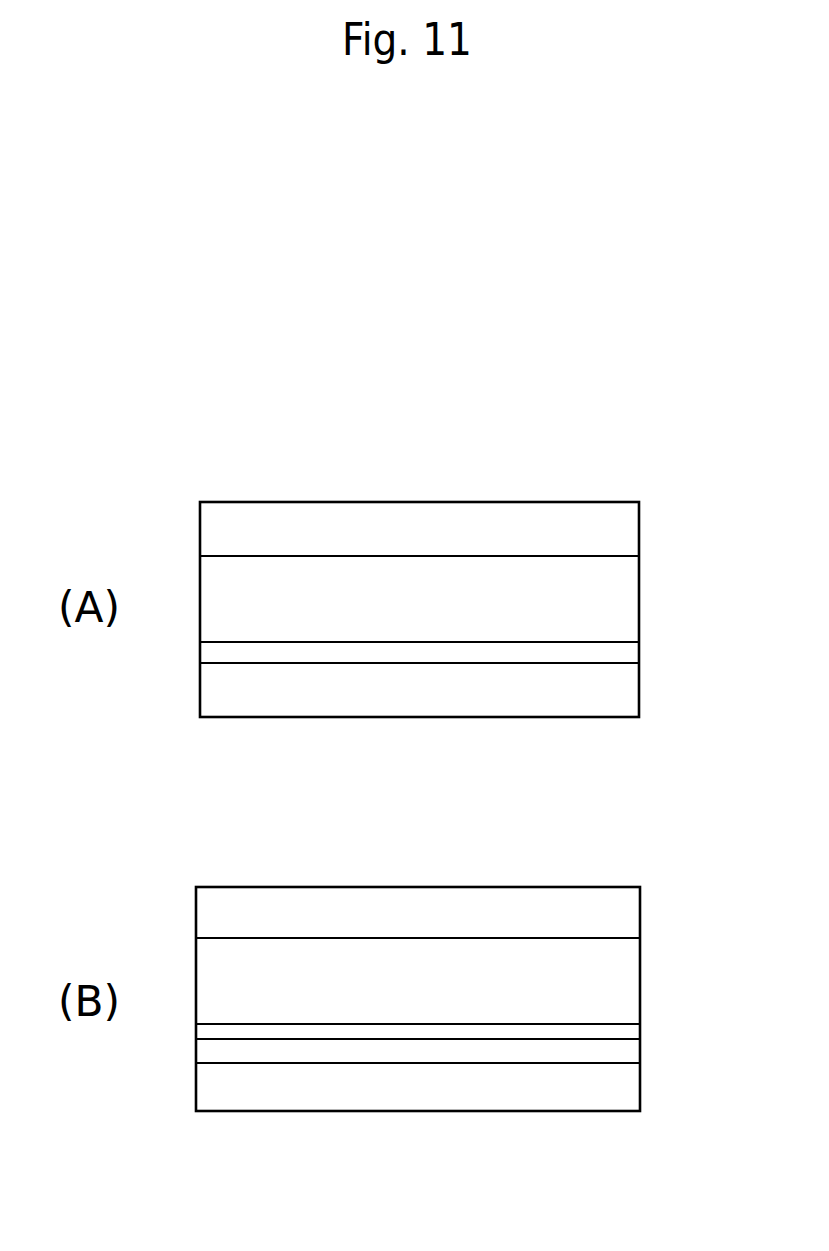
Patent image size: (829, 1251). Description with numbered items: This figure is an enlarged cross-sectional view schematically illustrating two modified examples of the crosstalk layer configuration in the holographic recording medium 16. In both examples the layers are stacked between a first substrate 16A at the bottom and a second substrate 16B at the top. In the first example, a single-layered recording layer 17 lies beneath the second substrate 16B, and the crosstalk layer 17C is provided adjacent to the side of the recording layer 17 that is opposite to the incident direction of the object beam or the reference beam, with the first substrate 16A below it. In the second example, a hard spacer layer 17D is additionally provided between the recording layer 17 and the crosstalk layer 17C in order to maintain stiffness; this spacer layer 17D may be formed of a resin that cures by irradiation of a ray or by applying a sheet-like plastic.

The holographic recording medium 16 is at (435, 485).
The first substrate 16A is at (630, 697).
The second substrate 16B is at (630, 520).
The recording layer 17 is at (630, 580).
The crosstalk layer 17C is at (630, 654).
The spacer layer 17D is at (632, 1032).